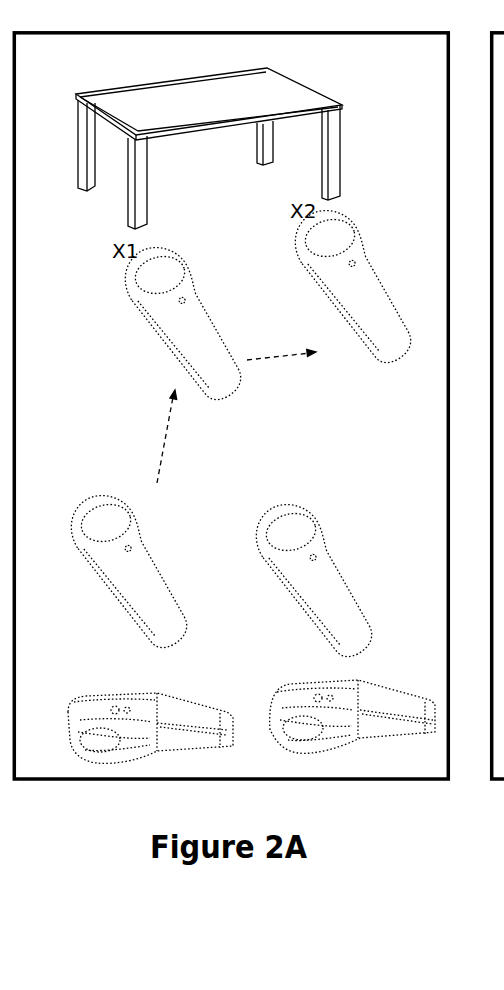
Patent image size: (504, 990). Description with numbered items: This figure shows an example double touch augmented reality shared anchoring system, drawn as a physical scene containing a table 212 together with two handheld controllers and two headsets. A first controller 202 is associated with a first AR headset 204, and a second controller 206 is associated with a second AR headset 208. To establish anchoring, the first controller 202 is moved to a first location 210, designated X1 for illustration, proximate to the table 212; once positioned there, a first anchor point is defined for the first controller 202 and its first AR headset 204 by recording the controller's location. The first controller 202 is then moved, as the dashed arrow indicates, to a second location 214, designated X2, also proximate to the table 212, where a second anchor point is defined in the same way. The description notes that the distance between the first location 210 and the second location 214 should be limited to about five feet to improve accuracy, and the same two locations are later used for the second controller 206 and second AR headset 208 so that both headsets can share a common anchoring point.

The first controller 202 is at (197, 290).
The first AR headset 204 is at (180, 695).
The second controller 206 is at (342, 563).
The second AR headset 208 is at (372, 738).
The first location 210 is at (86, 255).
The table 212 is at (308, 83).
The second location 214 is at (280, 206).